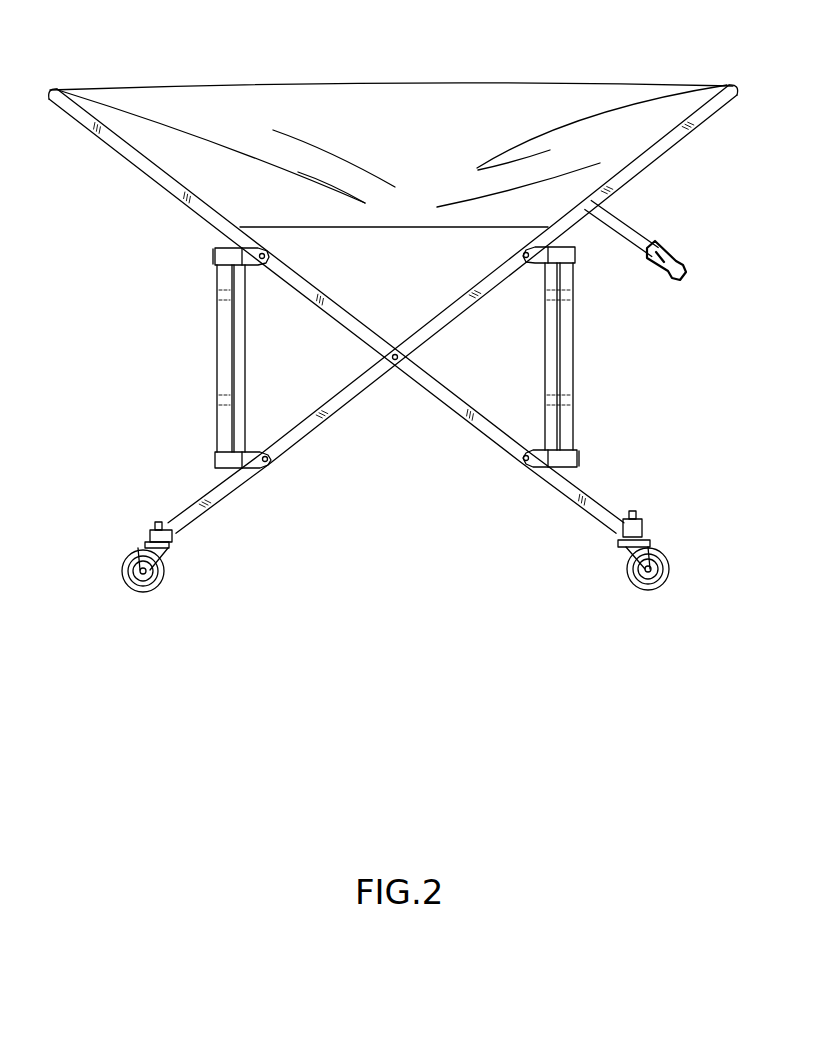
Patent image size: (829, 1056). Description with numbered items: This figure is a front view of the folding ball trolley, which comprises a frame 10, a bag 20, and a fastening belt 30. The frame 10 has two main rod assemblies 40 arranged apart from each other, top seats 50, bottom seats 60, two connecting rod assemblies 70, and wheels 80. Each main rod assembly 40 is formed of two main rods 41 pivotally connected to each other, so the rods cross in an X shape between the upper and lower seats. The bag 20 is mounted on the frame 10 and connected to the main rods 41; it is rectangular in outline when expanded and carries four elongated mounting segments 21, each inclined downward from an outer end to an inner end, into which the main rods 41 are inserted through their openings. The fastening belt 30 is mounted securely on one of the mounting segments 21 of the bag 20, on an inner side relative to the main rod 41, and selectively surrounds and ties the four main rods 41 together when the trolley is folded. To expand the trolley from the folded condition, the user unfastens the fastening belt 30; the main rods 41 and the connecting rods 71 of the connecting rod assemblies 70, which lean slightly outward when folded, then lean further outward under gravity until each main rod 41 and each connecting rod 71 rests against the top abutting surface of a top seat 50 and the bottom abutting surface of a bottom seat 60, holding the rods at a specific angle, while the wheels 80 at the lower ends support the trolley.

The frame 10 is at (158, 434).
The bag 20 is at (195, 70).
The mounting segment 21 is at (137, 160).
The fastening belt 30 is at (632, 238).
The main rod assembly 40 is at (393, 309).
The main rod 41 is at (237, 485).
The top seat 50 is at (228, 262).
The bottom seat 60 is at (222, 461).
The connecting rod assembly 70 is at (203, 338).
The connecting rod 71 is at (223, 366).
The wheel 80 is at (150, 585).